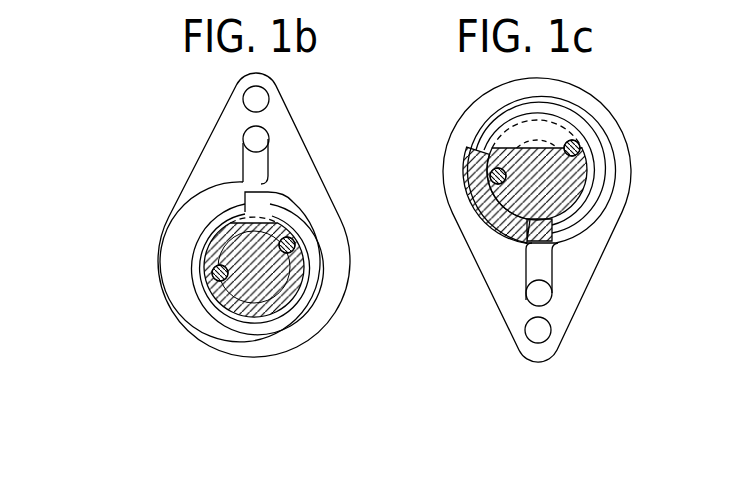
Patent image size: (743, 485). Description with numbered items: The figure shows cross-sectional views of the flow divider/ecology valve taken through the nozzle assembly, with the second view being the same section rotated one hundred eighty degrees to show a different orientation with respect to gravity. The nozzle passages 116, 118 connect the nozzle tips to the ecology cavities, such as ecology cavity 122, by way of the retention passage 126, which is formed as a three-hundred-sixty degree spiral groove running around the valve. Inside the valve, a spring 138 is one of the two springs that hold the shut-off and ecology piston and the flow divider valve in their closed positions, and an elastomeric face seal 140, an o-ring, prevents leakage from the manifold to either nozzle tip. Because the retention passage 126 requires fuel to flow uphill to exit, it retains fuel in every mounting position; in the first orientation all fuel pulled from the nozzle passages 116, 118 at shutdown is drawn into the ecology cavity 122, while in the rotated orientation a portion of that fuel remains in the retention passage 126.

In FIG. 1b, the nozzle passage 116 is at (259, 98).
In FIG. 1c, the nozzle passage 116 is at (541, 330).
In FIG. 1b, the nozzle passage 118 is at (259, 138).
In FIG. 1c, the nozzle passage 118 is at (542, 293).
In FIG. 1b, the ecology cavity 122 is at (303, 277).
In FIG. 1c, the ecology cavity 122 is at (583, 177).
In FIG. 1b, the retention passage 126 is at (182, 262).
In FIG. 1c, the retention passage 126 is at (607, 197).
In FIG. 1b, the spring 138 is at (290, 243).
In FIG. 1c, the spring 138 is at (576, 143).
In FIG. 1b, the elastomeric face seal 140 is at (176, 345).
In FIG. 1c, the elastomeric face seal 140 is at (492, 347).